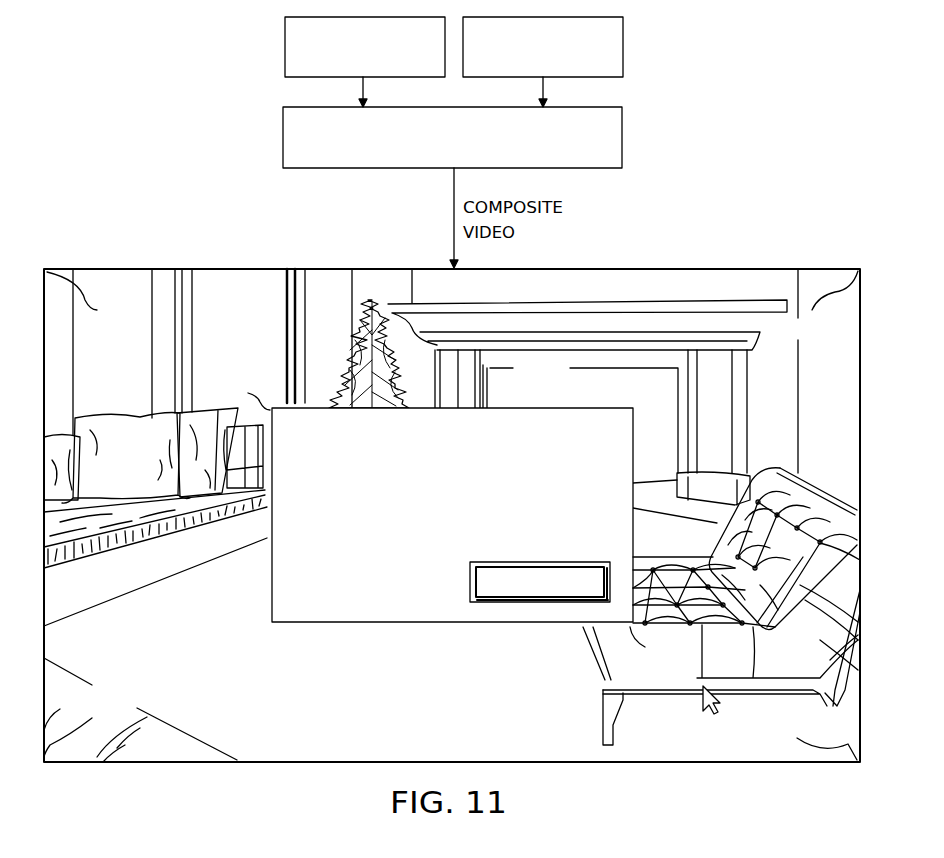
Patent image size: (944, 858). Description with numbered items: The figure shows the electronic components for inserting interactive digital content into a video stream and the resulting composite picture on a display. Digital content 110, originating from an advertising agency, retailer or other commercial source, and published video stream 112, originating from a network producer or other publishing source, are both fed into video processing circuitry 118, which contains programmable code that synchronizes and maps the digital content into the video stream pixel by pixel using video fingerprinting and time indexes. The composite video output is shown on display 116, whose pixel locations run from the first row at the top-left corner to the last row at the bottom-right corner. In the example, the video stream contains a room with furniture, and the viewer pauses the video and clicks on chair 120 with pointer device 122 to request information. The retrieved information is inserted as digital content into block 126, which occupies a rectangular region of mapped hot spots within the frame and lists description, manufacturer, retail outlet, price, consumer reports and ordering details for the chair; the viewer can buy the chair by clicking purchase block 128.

The digital content 110 is at (285, 47).
The published video stream 112 is at (623, 47).
The video processing circuitry 118 is at (283, 137).
The display 116 is at (220, 262).
The chair 120 is at (807, 490).
The pointer device 122 is at (708, 708).
The block 126 is at (530, 408).
The purchase block 128 is at (540, 562).